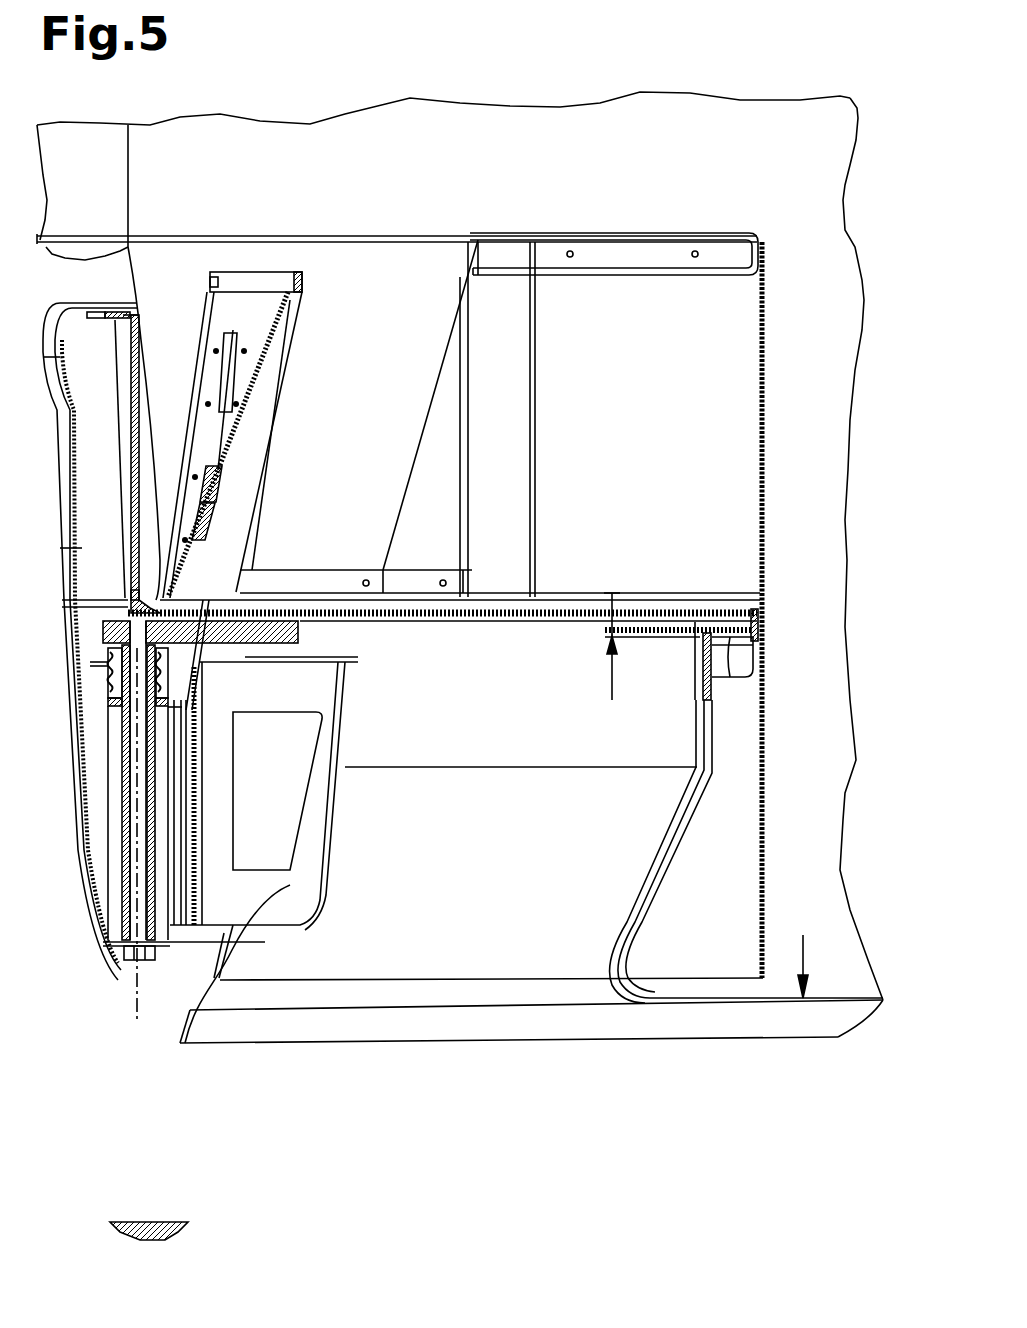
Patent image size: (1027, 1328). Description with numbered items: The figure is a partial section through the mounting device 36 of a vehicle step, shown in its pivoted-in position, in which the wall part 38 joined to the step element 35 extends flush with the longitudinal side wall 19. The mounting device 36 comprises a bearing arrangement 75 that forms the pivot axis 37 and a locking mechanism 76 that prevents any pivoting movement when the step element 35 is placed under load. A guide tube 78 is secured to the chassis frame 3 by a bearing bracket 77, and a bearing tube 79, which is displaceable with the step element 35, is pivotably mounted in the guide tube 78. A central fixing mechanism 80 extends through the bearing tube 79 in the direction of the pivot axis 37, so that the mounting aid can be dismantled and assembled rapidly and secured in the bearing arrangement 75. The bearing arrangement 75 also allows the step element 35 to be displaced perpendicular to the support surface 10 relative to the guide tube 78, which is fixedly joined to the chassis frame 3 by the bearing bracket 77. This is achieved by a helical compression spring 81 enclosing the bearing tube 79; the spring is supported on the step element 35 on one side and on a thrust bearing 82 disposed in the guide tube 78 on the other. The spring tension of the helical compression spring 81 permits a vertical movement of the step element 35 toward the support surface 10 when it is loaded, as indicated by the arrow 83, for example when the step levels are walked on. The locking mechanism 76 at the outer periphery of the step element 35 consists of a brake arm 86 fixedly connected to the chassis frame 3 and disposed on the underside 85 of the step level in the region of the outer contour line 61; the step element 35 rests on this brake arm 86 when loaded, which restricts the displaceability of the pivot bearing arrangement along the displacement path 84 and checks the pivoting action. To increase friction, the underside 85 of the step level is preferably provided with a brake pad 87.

The longitudinal side wall 19 is at (82, 170).
The chassis frame 3 is at (330, 640).
The outer contour line 61 is at (760, 622).
The brake pad 87 is at (762, 632).
The locking mechanism 76 is at (778, 653).
The underside 85 is at (730, 668).
The brake arm 86 is at (740, 680).
The displacement path 84 is at (607, 685).
The arrow 83 is at (808, 955).
The step element 35 is at (534, 1070).
The bearing bracket 77 is at (287, 903).
The mounting device 36 is at (88, 1060).
The wall part 38 is at (72, 608).
The central fixing mechanism 80 is at (113, 927).
The helical compression spring 81 is at (113, 663).
The thrust bearing 82 is at (113, 685).
The bearing tube 79 is at (123, 823).
The guide tube 78 is at (135, 897).
The pivot axis 37 is at (135, 1008).
The support surface 10 is at (153, 1220).
The bearing arrangement 75 is at (158, 992).